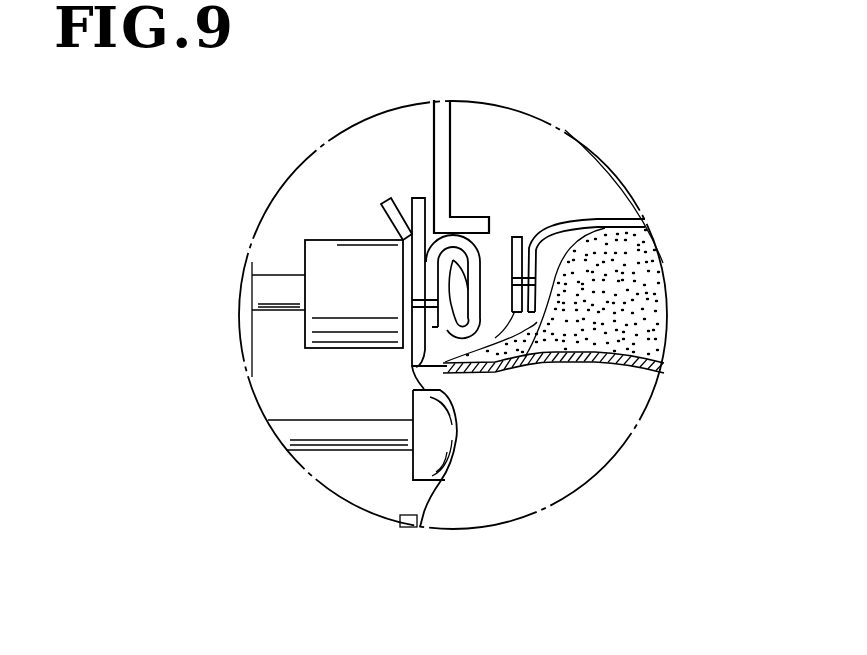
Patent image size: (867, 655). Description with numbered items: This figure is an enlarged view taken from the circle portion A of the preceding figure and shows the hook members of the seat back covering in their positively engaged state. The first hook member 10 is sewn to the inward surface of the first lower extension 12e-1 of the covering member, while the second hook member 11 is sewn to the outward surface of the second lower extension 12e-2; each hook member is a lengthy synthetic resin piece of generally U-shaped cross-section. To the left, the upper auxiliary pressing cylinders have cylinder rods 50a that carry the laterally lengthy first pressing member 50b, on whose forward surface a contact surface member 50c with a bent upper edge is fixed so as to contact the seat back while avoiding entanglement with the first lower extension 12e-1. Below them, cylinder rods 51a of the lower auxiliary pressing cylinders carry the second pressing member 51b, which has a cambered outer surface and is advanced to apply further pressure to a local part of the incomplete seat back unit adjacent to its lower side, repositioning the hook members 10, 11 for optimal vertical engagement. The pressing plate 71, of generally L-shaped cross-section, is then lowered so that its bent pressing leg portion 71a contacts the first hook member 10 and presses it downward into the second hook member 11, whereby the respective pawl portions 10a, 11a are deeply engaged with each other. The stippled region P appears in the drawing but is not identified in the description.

The circle portion A is at (601, 149).
The resin molding P is at (644, 293).
The first hook member 10 is at (481, 263).
The engagement end portion of first hook member 10a is at (515, 345).
The second hook member 11 is at (506, 236).
The engagement end portion of second hook member 11a is at (451, 288).
The first lower extension 12e-1 is at (419, 197).
The second lower extension 12e-2 is at (597, 215).
The cylinder rod 50a is at (276, 282).
The first pressing member 50b is at (327, 242).
The contact surface member 50c is at (386, 200).
The cylinder rod 51a is at (318, 420).
The second pressing member 51b is at (415, 465).
The pressing plate 71 is at (443, 143).
The pressing leg portion 71a is at (462, 217).